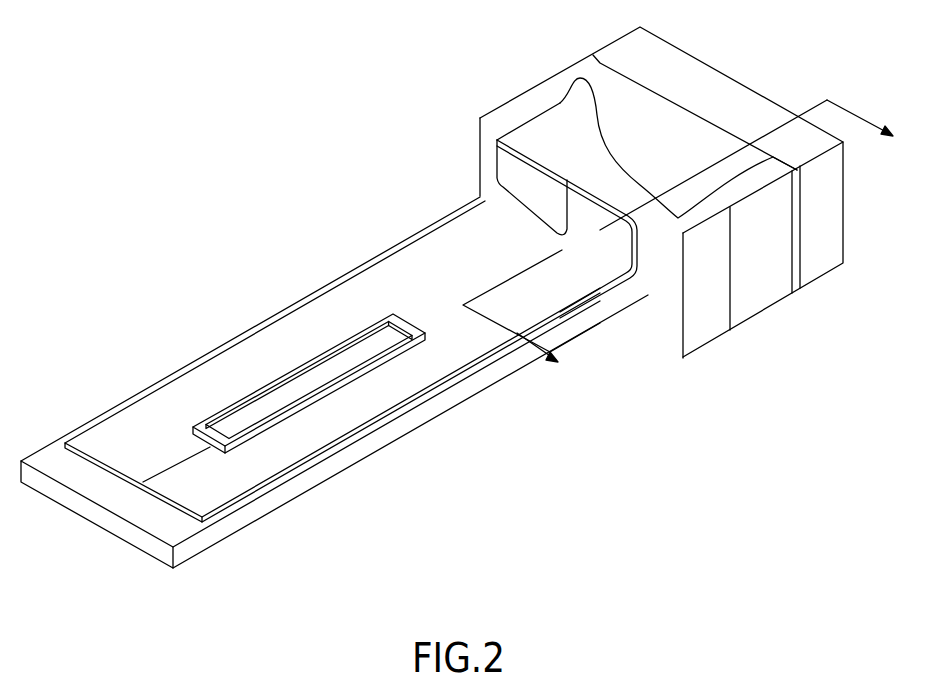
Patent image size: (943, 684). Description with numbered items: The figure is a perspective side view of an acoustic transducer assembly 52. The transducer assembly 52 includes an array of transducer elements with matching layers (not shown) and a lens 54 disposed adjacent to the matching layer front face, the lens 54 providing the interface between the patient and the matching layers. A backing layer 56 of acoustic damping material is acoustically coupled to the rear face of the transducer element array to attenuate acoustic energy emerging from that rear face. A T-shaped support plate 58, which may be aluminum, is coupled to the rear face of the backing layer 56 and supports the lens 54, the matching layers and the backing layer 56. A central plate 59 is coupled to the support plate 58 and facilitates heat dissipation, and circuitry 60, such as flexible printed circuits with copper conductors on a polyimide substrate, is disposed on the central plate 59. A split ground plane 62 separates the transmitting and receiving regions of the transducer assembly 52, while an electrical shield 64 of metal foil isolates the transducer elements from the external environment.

The transducer assembly 52 is at (158, 80).
The lens 54 is at (716, 73).
The backing layer 56 is at (763, 297).
The support plate 58 is at (500, 120).
The central plate 59 is at (334, 382).
The circuitry 60 is at (130, 410).
The split ground plane 62 is at (535, 315).
The electrical shield 64 is at (720, 147).